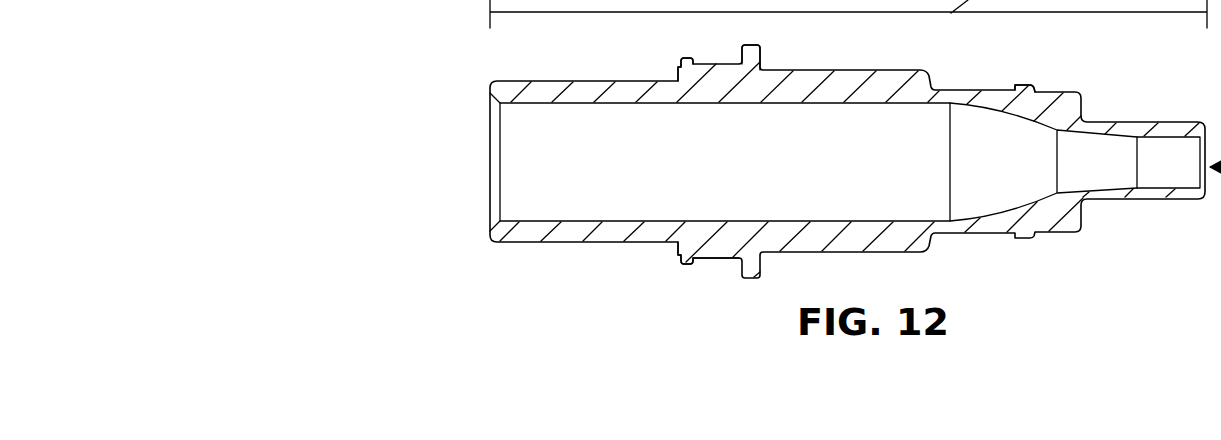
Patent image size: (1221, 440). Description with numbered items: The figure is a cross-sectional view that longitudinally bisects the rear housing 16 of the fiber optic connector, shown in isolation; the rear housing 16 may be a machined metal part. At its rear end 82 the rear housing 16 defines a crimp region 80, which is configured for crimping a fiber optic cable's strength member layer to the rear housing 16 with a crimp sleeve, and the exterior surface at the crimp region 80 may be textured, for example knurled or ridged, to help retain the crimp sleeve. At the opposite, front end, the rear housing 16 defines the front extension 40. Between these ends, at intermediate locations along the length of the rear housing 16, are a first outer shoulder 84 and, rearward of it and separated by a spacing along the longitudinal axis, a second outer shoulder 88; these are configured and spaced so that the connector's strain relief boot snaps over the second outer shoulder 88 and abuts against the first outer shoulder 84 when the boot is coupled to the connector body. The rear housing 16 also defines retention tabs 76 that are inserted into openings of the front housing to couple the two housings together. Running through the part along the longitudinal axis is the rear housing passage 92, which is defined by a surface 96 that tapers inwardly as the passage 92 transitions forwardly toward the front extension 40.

The rear housing 16 is at (716, 264).
The front extension 40 is at (1147, 122).
The retention tabs 76 is at (1029, 87).
The crimp region 80 is at (597, 81).
The rear end 82 is at (480, 167).
The first outer shoulder 84 is at (752, 46).
The second outer shoulder 88 is at (683, 61).
The rear housing passage 92 is at (723, 179).
The surface 96 is at (1012, 212).